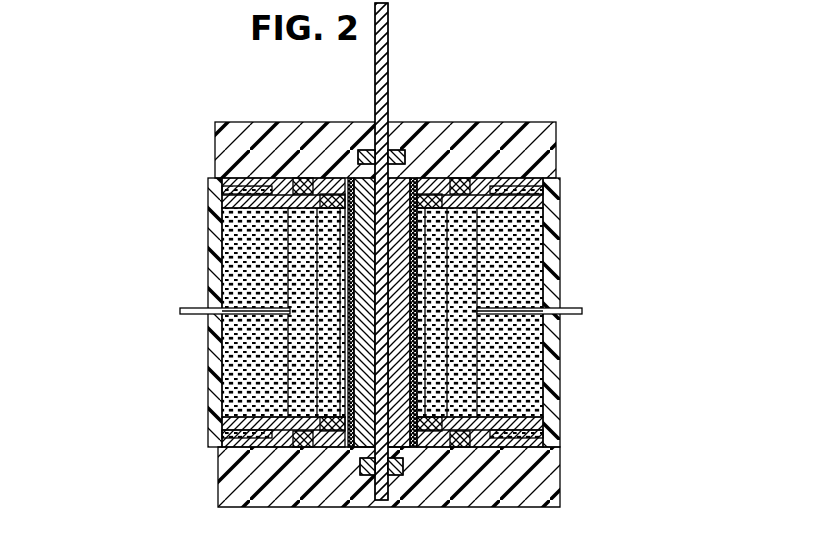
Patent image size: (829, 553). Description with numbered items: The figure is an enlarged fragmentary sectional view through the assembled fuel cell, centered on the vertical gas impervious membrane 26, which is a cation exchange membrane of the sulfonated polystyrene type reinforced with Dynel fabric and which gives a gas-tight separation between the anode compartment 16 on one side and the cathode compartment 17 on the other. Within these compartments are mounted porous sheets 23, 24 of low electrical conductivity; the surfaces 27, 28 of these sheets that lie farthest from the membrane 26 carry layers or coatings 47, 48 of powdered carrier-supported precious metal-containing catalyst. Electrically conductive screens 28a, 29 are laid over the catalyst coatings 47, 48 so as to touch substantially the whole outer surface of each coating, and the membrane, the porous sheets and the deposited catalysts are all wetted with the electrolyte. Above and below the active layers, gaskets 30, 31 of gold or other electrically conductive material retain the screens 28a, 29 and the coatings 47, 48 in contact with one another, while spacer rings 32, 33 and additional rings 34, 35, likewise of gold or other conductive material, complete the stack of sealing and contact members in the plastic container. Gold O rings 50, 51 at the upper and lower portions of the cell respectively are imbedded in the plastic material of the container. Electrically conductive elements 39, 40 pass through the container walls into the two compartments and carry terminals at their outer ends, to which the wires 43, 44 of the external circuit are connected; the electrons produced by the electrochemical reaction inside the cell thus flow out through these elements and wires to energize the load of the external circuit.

The gas impervious membrane 26 is at (388, 42).
The O ring 51 is at (372, 150).
The O ring 50 is at (392, 150).
The surface of porous sheet 28 is at (345, 182).
The surface of porous sheet 27 is at (412, 182).
The catalyst coating 48 is at (355, 267).
The catalyst coating 47 is at (417, 255).
The electrically conductive screen 29 is at (348, 350).
The electrically conductive screen 28a is at (417, 362).
The anode compartment 16 is at (262, 291).
The cathode compartment 17 is at (514, 346).
The wire 43 is at (190, 312).
The wire 44 is at (598, 312).
The electrically conductive element 40 is at (257, 314).
The electrically conductive element 39 is at (508, 308).
The ring 35 is at (300, 420).
The ring 34 is at (468, 420).
The spacer ring 33 is at (283, 473).
The spacer ring 32 is at (443, 448).
The gasket 31 is at (302, 497).
The gasket 30 is at (420, 482).
The porous sheet 24 is at (370, 458).
The porous sheet 23 is at (404, 458).